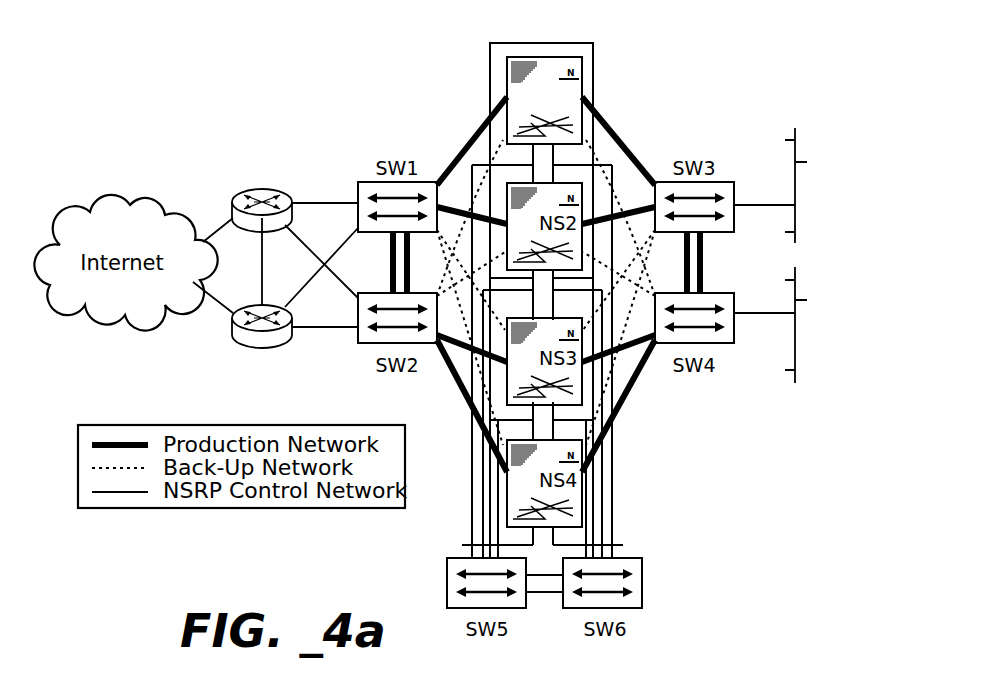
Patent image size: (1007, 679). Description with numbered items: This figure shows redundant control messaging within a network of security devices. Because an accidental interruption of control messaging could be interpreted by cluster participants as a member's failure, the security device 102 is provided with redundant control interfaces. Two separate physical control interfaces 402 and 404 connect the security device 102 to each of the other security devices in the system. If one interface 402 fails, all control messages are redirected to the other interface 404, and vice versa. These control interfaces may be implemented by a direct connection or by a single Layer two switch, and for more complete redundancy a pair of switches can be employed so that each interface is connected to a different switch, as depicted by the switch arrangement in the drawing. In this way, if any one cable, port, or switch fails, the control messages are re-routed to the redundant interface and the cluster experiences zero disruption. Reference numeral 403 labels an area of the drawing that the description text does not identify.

The security device 102 is at (546, 43).
The control interface 402 is at (490, 157).
The protected network 403 is at (769, 120).
The control interface 404 is at (600, 160).